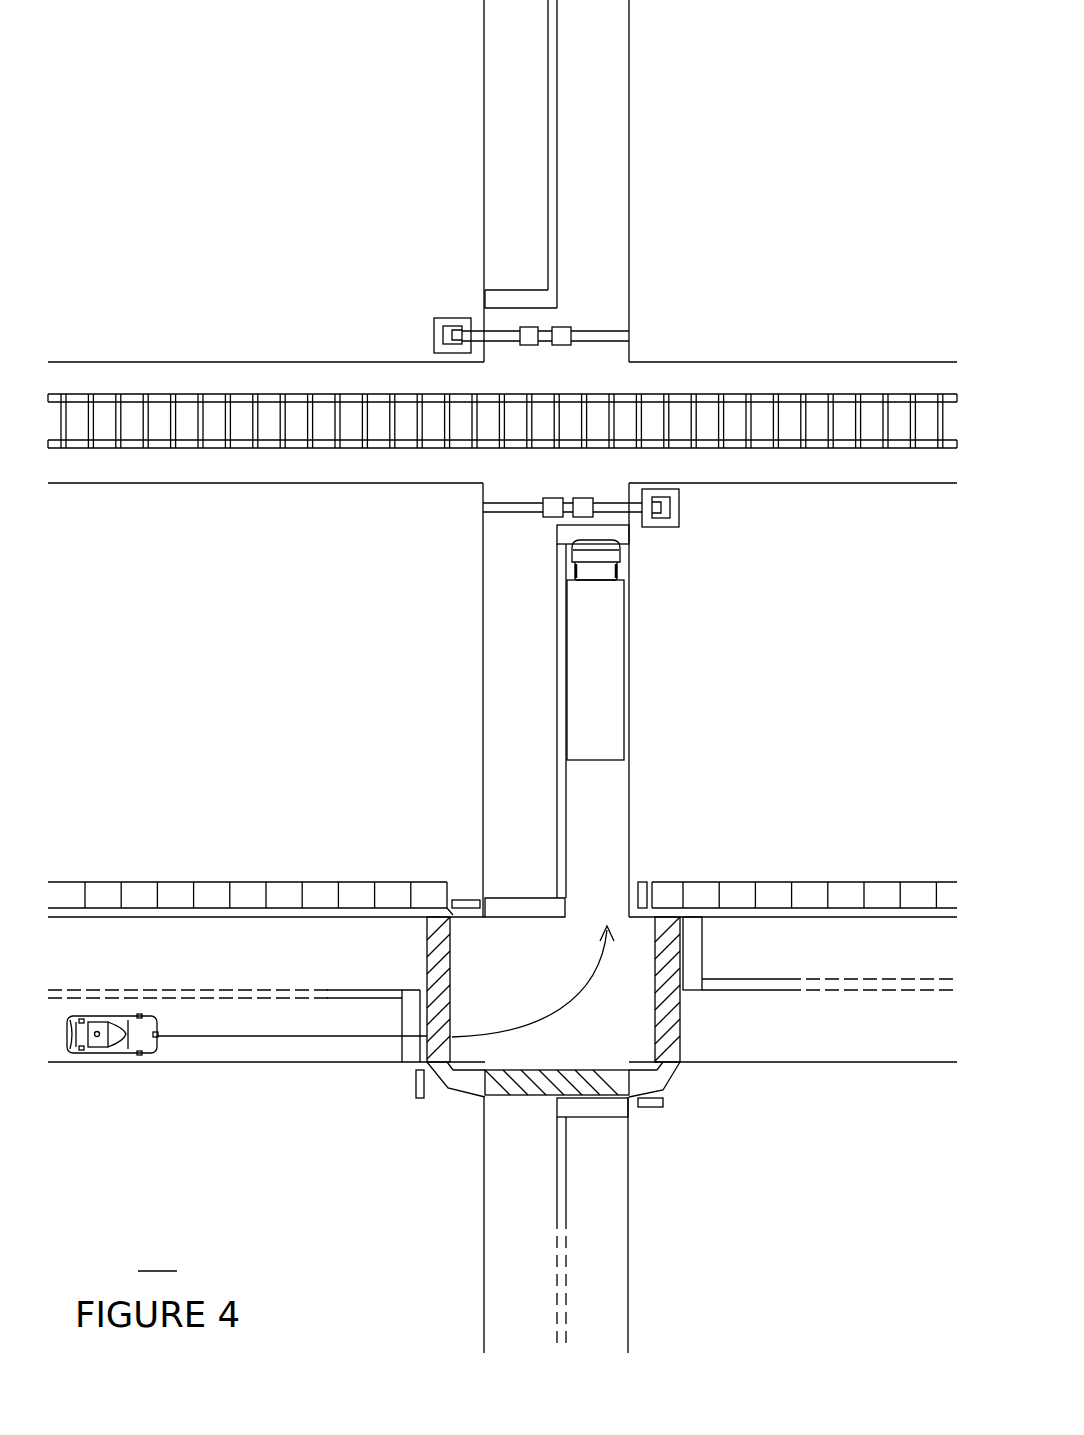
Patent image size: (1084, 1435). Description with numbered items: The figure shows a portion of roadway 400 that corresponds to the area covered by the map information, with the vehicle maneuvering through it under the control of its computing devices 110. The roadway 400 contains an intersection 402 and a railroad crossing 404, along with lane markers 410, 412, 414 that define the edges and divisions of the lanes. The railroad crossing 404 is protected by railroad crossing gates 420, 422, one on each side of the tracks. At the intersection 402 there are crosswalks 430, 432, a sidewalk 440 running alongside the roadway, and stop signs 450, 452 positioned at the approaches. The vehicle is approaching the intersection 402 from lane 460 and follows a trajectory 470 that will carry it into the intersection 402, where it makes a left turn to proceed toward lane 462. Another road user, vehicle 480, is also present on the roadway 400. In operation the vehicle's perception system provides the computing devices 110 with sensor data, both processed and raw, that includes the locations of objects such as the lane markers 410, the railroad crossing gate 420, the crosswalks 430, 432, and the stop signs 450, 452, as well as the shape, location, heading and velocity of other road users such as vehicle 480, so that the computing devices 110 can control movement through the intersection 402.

The roadway 400 is at (502, 676).
The computing devices 110 is at (107, 1018).
The intersection 402 is at (533, 981).
The railroad crossing 404 is at (502, 437).
The lane marker 410 is at (300, 998).
The lane marker 412 is at (203, 1063).
The lane marker 414 is at (557, 85).
The railroad crossing gate 420 is at (483, 512).
The railroad crossing gate 422 is at (445, 317).
The crosswalk 430 is at (427, 930).
The crosswalk 432 is at (680, 917).
The sidewalk 440 is at (730, 882).
The stop sign 450 is at (465, 900).
The stop sign 452 is at (663, 1103).
The lane 460 is at (370, 1026).
The lane 462 is at (557, 721).
The trajectory 470 is at (380, 1038).
The vehicle 480 is at (625, 675).